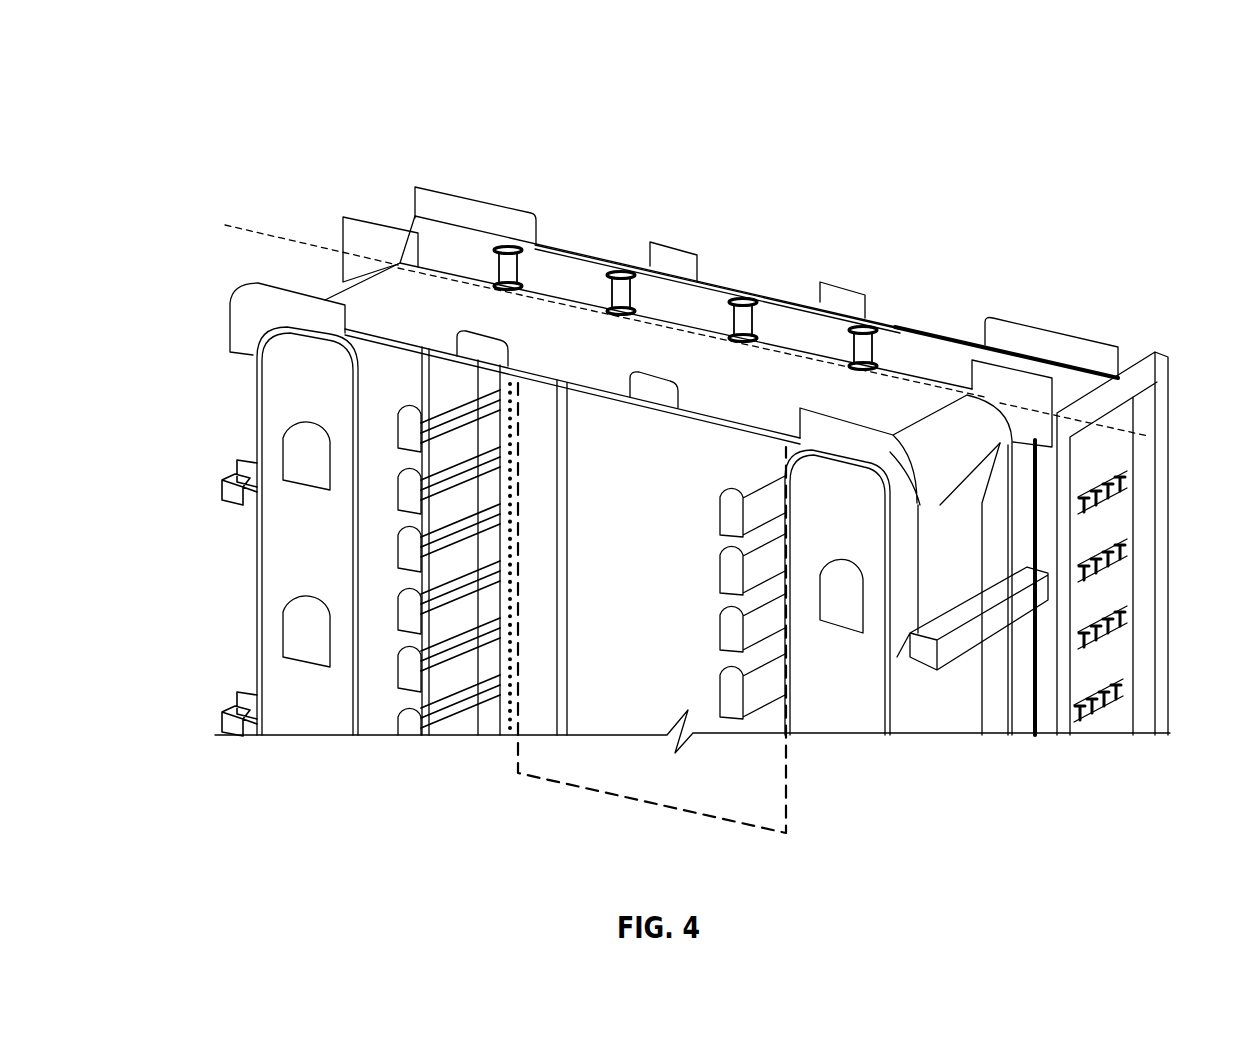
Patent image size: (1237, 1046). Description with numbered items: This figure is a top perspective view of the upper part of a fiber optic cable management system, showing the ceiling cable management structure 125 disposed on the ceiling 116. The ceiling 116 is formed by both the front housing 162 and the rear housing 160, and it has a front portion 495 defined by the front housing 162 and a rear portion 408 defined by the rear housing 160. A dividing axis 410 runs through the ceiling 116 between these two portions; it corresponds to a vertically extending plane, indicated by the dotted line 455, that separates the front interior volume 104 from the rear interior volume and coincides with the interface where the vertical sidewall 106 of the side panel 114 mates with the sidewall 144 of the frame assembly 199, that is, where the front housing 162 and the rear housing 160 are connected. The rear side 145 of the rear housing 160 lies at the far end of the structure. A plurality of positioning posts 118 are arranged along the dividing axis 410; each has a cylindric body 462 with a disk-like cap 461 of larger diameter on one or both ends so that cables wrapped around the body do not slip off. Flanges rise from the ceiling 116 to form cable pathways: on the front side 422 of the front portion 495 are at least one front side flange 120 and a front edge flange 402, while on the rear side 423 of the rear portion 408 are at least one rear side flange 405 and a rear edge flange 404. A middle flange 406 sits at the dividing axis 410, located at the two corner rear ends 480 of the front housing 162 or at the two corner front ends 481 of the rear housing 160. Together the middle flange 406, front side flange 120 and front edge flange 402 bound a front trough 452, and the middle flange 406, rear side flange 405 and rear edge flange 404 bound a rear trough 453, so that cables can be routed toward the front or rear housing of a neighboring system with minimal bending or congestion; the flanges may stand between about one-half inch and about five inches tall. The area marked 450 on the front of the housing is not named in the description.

The front interior volume 104 is at (623, 697).
The vertical sidewall 106 is at (505, 476).
The side panel 114 is at (490, 508).
The ceiling 116 is at (705, 303).
The positioning post 118 is at (577, 268).
The front side flange 120 is at (665, 378).
The ceiling cable management structure 125 is at (590, 93).
The sidewall 144 is at (540, 488).
The rear side 145 is at (1038, 712).
The rear housing 160 is at (1140, 353).
The front housing 162 is at (386, 405).
The frame assembly 199 is at (557, 533).
The front edge flange 402 is at (243, 335).
The rear edge flange 404 is at (420, 268).
The rear side flange 405 is at (853, 297).
The middle flange 406 is at (363, 237).
The rear portion 408 is at (600, 245).
The dividing axis 410 is at (300, 240).
The front side 422 is at (720, 420).
The rear side 423 is at (893, 327).
The housing body 450 is at (678, 620).
The front trough 452 is at (817, 395).
The rear trough 453 is at (900, 347).
The dotted line 455 is at (520, 768).
The disk-like cap 461 is at (752, 322).
The cylindric body 462 is at (752, 312).
The corner rear ends 480 is at (405, 268).
The corner front ends 481 is at (403, 226).
The front portion 495 is at (383, 300).